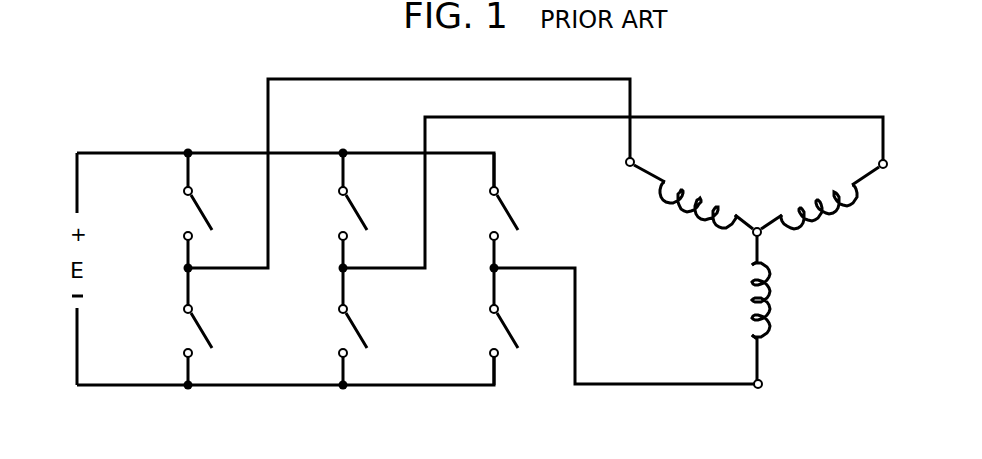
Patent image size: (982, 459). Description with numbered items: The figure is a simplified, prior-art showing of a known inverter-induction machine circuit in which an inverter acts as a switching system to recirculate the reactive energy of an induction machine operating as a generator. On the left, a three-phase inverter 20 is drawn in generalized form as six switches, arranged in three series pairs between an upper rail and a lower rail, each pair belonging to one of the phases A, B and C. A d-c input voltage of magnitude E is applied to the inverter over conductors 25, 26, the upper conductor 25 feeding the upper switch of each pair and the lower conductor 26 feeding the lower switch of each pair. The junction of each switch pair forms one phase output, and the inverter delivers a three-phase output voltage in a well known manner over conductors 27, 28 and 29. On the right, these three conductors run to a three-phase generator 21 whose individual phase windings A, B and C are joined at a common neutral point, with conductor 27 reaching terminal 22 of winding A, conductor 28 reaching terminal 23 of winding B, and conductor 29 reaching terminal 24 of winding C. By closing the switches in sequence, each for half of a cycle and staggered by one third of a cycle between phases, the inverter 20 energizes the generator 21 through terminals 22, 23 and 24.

The three-phase inverter 20 is at (362, 436).
The three-phase generator 21 is at (862, 298).
The terminal 22 is at (613, 162).
The terminal 23 is at (902, 166).
The terminal 24 is at (758, 402).
The conductor 25 is at (285, 156).
The conductor 26 is at (285, 386).
The conductor 27 is at (409, 159).
The conductor 28 is at (613, 178).
The conductor 29 is at (624, 326).